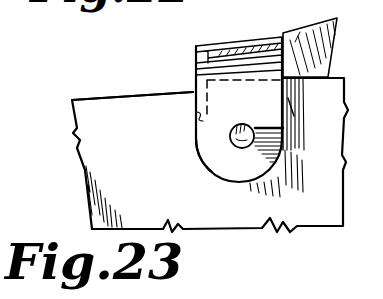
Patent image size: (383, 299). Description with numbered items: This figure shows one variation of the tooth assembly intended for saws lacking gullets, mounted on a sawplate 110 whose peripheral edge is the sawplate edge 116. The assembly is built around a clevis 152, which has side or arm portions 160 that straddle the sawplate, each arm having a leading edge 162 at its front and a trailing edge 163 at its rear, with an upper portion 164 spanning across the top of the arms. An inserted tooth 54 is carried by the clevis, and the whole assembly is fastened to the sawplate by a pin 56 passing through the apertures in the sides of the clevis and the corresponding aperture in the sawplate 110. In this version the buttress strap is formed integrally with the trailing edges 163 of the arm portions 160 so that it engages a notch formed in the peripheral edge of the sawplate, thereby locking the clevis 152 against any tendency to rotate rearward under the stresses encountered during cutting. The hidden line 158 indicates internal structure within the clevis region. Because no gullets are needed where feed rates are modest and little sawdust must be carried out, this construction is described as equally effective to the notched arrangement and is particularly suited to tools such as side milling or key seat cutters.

The sawplate 110 is at (282, 214).
The sawplate edge 116 is at (118, 96).
The clevis 152 is at (183, 132).
The hidden passage 158 is at (200, 102).
The trailing edges 163 is at (196, 142).
The upper portion 164 is at (233, 43).
The inserted tooth 54 is at (300, 32).
The pin 56 is at (233, 143).
The side or arm portions 160 is at (291, 134).
The leading edges 162 is at (292, 106).